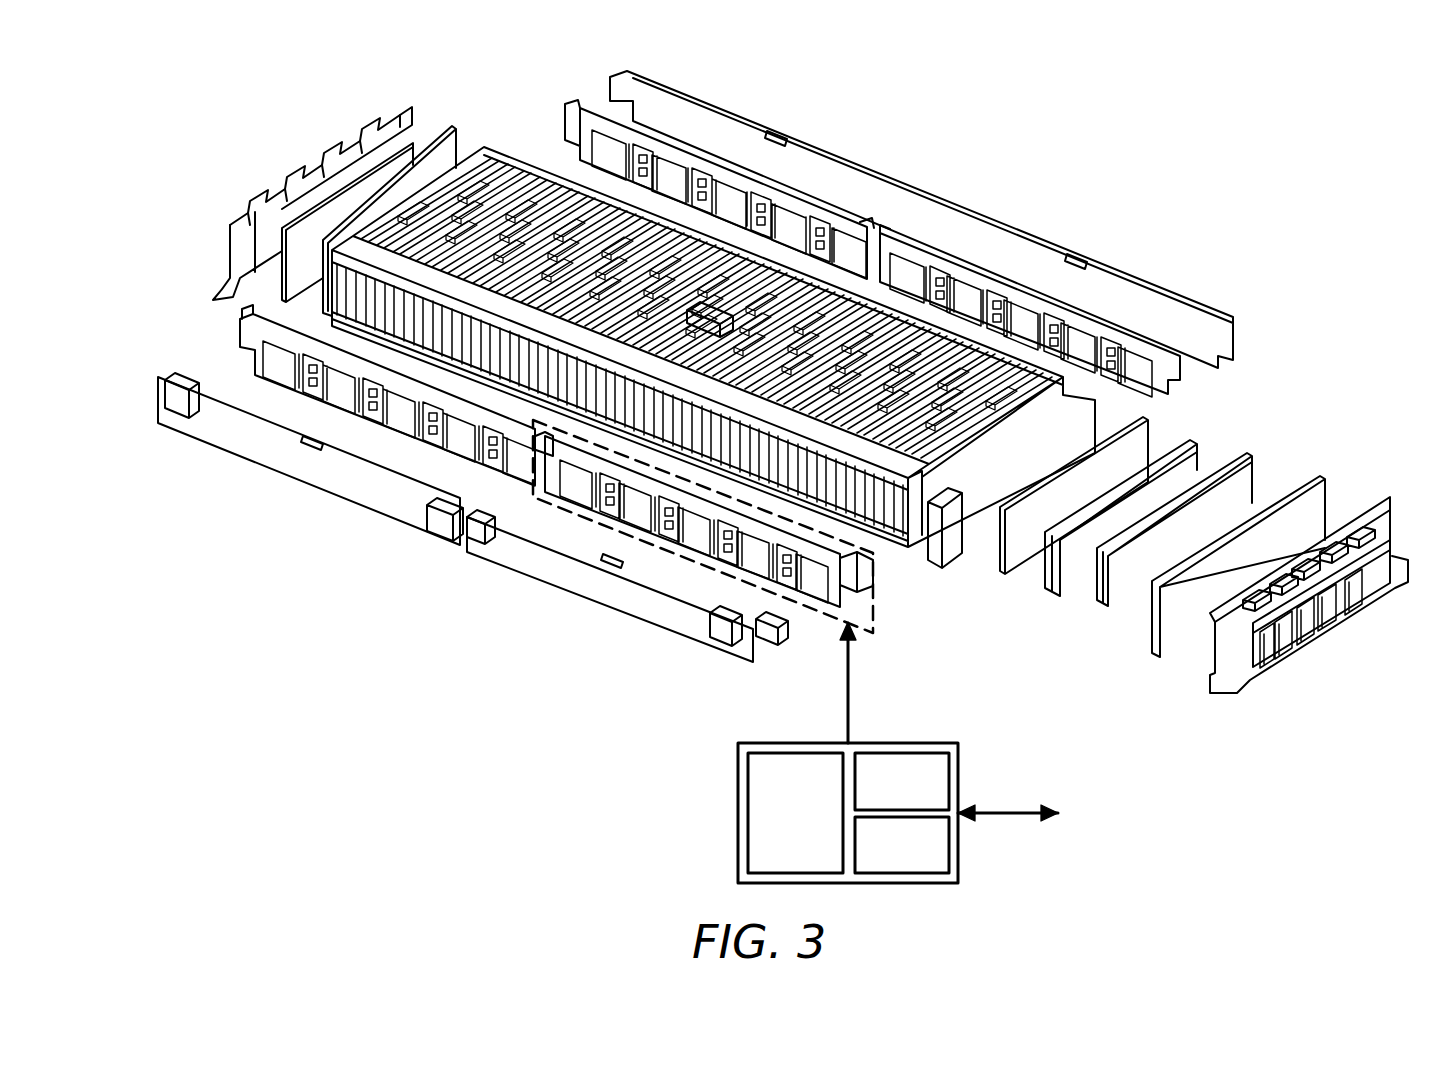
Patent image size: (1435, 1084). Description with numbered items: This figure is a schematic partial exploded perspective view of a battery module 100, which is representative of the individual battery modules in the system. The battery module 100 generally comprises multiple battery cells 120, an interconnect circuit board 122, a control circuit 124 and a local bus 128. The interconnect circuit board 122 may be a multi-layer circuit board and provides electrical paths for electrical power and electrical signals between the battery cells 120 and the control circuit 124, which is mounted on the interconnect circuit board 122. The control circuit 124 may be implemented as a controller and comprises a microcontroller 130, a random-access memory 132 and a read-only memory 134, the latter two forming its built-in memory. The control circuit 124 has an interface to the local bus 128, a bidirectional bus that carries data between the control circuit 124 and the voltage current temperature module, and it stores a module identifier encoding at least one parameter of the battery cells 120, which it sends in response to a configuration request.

The battery module 100 is at (258, 112).
The battery cells 120 is at (622, 210).
The interconnect circuit board 122 is at (240, 323).
The control circuit 124 is at (738, 790).
The local bus 128 is at (1003, 812).
The microcontroller 130 is at (795, 813).
The random-access memory (RAM) 132 is at (902, 781).
The read-only memory (ROM) 134 is at (902, 845).